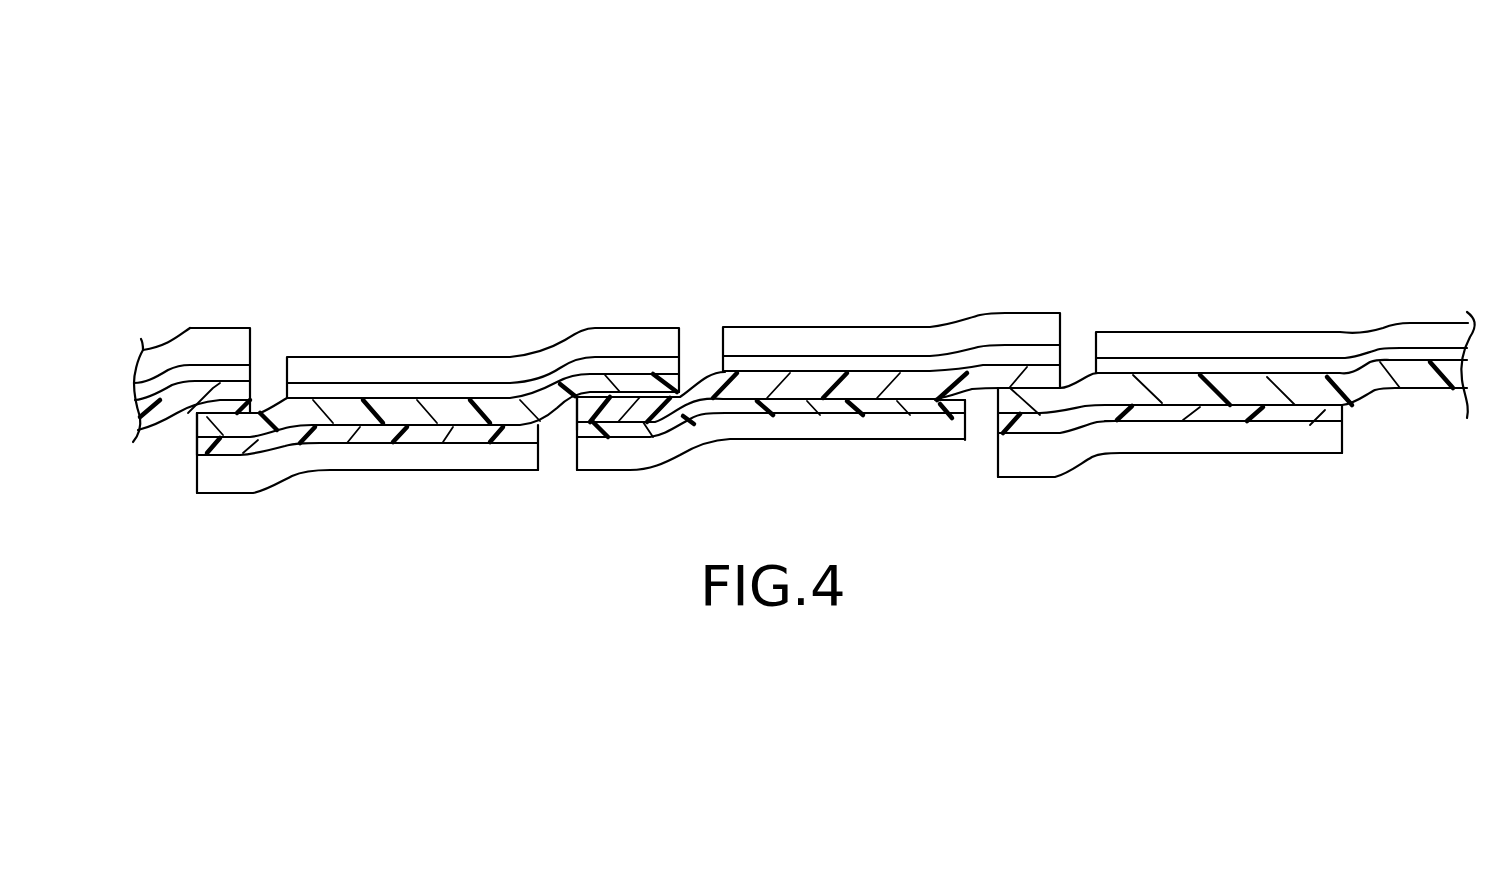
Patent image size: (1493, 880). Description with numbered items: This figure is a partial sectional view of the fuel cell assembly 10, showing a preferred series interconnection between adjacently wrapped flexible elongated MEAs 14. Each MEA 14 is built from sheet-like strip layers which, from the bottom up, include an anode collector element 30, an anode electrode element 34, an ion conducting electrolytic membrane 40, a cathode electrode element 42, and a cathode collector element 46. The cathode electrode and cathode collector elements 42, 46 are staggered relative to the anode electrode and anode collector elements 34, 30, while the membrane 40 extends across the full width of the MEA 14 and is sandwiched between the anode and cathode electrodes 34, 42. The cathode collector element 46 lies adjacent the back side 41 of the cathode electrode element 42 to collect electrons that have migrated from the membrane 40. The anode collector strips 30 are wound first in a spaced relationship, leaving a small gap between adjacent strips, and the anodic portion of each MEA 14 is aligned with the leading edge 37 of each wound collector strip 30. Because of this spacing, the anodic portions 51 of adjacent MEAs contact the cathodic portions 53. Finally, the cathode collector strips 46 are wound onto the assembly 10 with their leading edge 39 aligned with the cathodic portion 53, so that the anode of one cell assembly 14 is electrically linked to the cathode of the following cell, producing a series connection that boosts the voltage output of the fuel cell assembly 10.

The fuel cell assembly 10 is at (548, 142).
The flexible elongated MEA 14 is at (423, 335).
The anode collector element 30 is at (463, 462).
The anode electrode element 34 is at (235, 457).
The leading edge 37 is at (196, 492).
The leading edge 39 is at (686, 338).
The ion conducting electrolytic membrane 40 is at (365, 427).
The back side 41 is at (1142, 407).
The cathode electrode element 42 is at (332, 390).
The cathode collector element 46 is at (563, 337).
The anodic portion 51 is at (196, 455).
The cathodic portion 53 is at (222, 398).